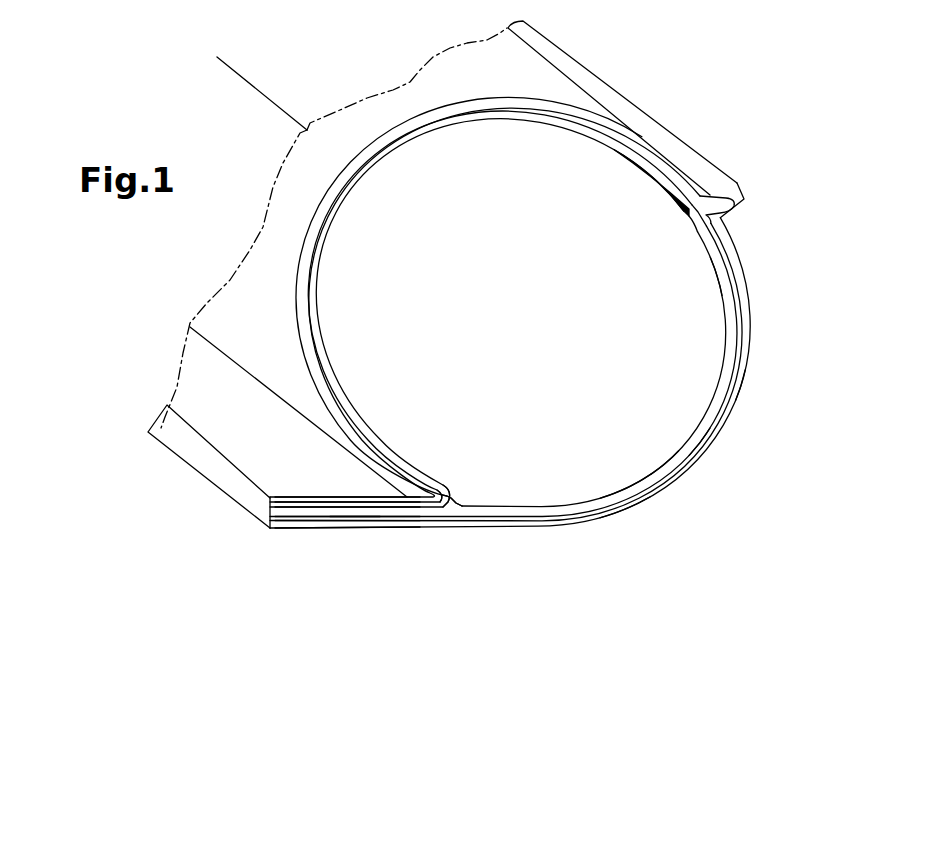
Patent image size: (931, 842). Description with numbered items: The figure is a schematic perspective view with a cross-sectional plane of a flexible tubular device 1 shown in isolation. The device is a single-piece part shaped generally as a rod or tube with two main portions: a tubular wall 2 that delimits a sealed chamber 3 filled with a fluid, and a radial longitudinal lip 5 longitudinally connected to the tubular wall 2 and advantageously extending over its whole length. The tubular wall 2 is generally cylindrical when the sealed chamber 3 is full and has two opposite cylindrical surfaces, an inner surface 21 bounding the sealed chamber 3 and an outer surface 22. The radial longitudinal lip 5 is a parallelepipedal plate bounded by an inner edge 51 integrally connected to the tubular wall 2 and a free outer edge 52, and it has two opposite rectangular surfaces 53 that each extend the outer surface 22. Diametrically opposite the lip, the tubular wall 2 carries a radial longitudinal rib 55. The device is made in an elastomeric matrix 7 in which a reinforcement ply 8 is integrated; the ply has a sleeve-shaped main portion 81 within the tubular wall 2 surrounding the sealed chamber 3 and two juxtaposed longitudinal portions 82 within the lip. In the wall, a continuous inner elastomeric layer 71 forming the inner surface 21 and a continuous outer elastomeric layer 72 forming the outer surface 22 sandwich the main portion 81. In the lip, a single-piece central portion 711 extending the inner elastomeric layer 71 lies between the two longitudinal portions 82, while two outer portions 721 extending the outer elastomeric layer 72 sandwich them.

The flexible tubular device 1 is at (694, 127).
The tubular wall 2 is at (717, 437).
The sealed chamber 3 is at (677, 295).
The radial longitudinal lip 5 is at (407, 552).
The elastomeric matrix 7 is at (567, 527).
The reinforcement ply 8 is at (503, 520).
The inner surface 21 is at (618, 478).
The outer surface 22 is at (619, 515).
The inner edge 51 is at (458, 493).
The outer edge 52 is at (195, 463).
The rectangular surfaces 53 is at (217, 420).
The radial longitudinal rib 55 is at (745, 188).
The inner elastomeric layer 71 is at (692, 428).
The outer elastomeric layer 72 is at (740, 380).
The main portion 81 is at (665, 470).
The longitudinal portions 82 is at (294, 514).
The central portion 711 is at (357, 513).
The outer portions 721 is at (363, 500).